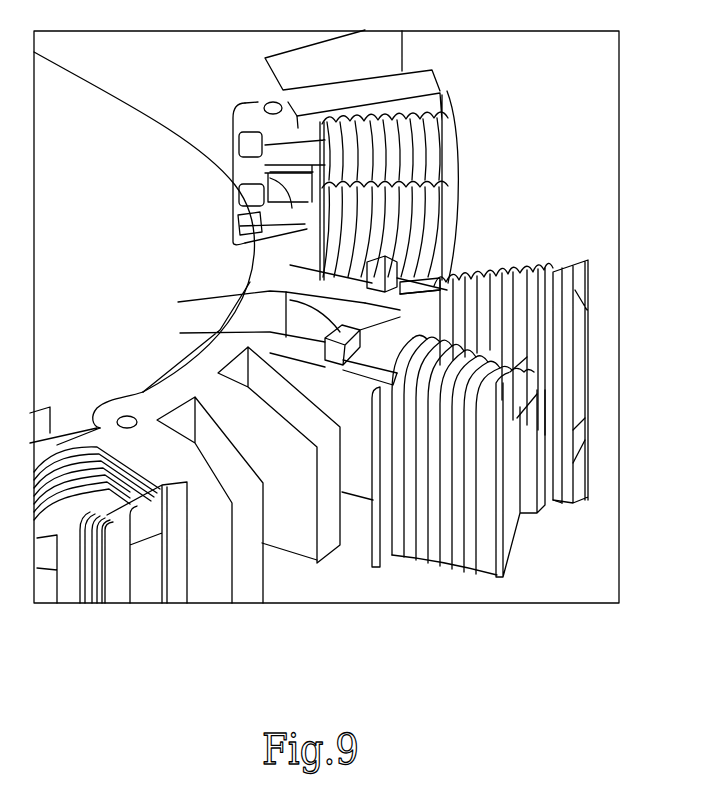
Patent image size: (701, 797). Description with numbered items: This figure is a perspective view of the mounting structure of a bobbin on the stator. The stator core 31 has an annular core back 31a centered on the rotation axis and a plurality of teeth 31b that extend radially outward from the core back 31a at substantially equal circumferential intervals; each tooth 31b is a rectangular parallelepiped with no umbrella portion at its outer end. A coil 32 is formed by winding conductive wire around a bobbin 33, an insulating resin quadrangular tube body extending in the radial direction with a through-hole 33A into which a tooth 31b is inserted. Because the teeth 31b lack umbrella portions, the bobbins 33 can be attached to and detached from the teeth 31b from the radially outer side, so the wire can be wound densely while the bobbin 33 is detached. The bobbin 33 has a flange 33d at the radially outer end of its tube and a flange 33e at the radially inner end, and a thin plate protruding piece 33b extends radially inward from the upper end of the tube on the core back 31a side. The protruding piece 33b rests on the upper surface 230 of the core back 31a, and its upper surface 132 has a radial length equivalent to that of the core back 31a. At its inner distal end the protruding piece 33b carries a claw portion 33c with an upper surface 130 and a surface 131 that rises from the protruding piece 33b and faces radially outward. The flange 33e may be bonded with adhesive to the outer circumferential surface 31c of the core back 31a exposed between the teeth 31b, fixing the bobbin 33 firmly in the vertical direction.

The stator core 31 is at (143, 380).
The core back 31a is at (113, 77).
The teeth 31b is at (248, 577).
The outer circumferential surface 31c is at (285, 301).
The coil 32 is at (533, 273).
The bobbin 33 is at (583, 255).
The through-hole 33A is at (538, 418).
The protruding piece 33b is at (267, 233).
The claw portion 33c is at (243, 208).
The flange 33d is at (543, 527).
The flange 33e is at (408, 545).
The upper surface 130 is at (288, 307).
The surface 131 is at (360, 336).
The upper surface 132 is at (257, 176).
The upper surface 230 is at (137, 407).